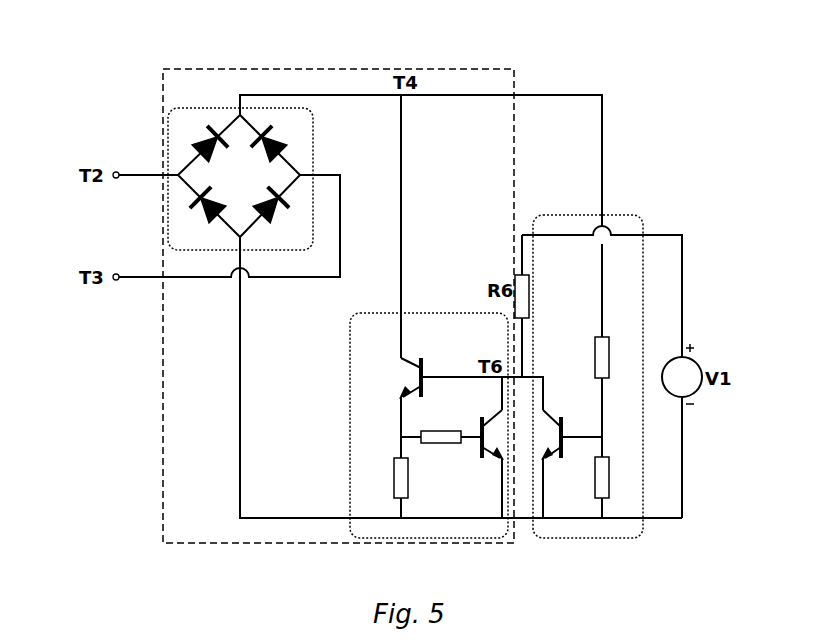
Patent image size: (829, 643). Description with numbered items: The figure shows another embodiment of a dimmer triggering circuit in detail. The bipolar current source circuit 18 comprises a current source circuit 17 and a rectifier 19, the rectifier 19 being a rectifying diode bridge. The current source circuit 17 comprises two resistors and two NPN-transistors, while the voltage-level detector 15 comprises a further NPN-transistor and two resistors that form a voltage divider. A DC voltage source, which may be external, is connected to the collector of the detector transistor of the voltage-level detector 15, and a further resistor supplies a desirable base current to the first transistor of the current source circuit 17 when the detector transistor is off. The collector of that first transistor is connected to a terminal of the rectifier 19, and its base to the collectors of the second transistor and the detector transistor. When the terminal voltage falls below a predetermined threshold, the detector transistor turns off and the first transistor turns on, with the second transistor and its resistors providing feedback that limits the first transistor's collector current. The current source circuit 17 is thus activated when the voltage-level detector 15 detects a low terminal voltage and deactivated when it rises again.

The voltage-level detector 15 is at (643, 215).
The current source circuit 17 is at (350, 338).
The bipolar current source circuit 18 is at (514, 69).
The rectifier 19 is at (313, 118).